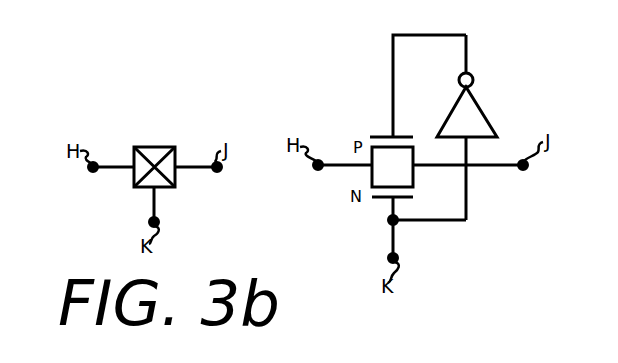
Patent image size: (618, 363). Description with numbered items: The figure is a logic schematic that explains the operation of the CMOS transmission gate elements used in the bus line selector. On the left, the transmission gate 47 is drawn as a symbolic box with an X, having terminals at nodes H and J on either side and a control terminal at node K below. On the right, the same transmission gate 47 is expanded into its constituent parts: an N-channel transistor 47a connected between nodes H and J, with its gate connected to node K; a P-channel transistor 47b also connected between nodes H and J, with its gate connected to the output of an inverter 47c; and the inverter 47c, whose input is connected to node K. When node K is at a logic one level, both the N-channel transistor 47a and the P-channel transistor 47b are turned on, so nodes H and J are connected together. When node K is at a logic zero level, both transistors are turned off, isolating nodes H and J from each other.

The transmission gate 47 is at (154, 146).
The N-channel transistor 47a is at (378, 180).
The P-channel transistor 47b is at (370, 142).
The inverter 47c is at (468, 118).